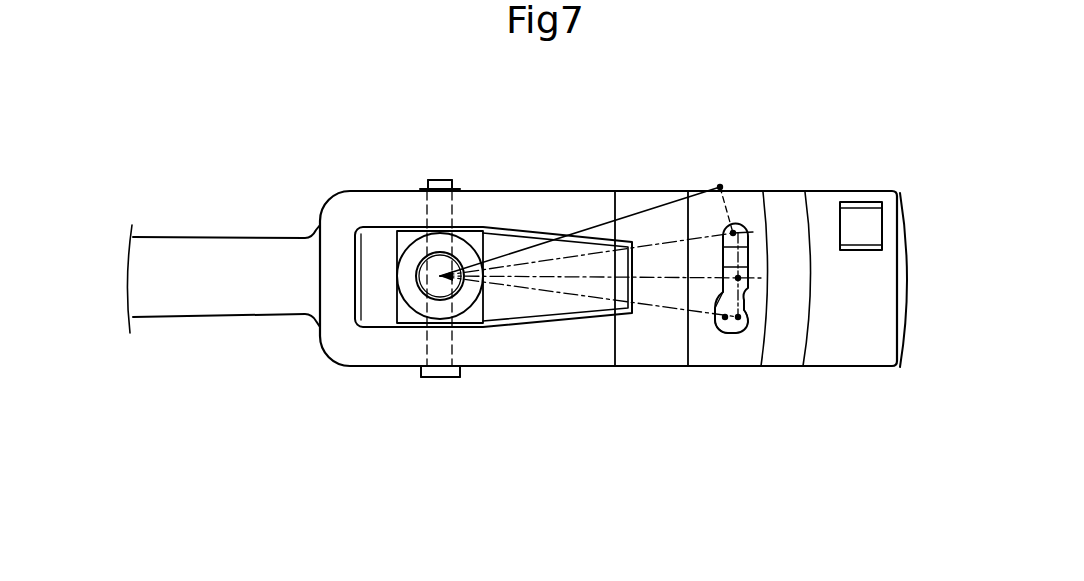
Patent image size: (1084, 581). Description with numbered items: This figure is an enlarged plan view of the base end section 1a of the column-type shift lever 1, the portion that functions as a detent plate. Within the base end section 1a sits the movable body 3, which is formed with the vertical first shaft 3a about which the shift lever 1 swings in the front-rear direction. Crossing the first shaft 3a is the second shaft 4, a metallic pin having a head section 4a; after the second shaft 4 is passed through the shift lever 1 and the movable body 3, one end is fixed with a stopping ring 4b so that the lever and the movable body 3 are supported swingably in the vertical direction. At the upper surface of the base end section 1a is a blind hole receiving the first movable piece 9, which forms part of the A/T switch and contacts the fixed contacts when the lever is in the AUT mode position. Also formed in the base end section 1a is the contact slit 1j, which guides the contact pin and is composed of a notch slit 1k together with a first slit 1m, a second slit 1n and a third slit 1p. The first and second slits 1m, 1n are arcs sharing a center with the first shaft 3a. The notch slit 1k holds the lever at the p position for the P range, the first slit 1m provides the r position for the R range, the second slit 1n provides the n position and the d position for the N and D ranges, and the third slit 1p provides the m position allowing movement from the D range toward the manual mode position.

The shift lever 1 is at (281, 336).
The base end section 1a is at (560, 192).
The movable body 3 is at (538, 310).
The first shaft 3a is at (422, 297).
The second shaft 4 is at (427, 182).
The head section 4a is at (450, 377).
The stopping ring 4b is at (456, 189).
The first movable piece 9 is at (862, 217).
The r position r is at (684, 195).
The P position p is at (720, 187).
The notch slit 1k is at (705, 192).
The first slit 1m is at (752, 252).
The contact slit 1j is at (714, 294).
The third slit 1p is at (712, 338).
The m position m is at (724, 335).
The d position d is at (743, 332).
The second slit 1n is at (748, 322).
The n position n is at (750, 284).